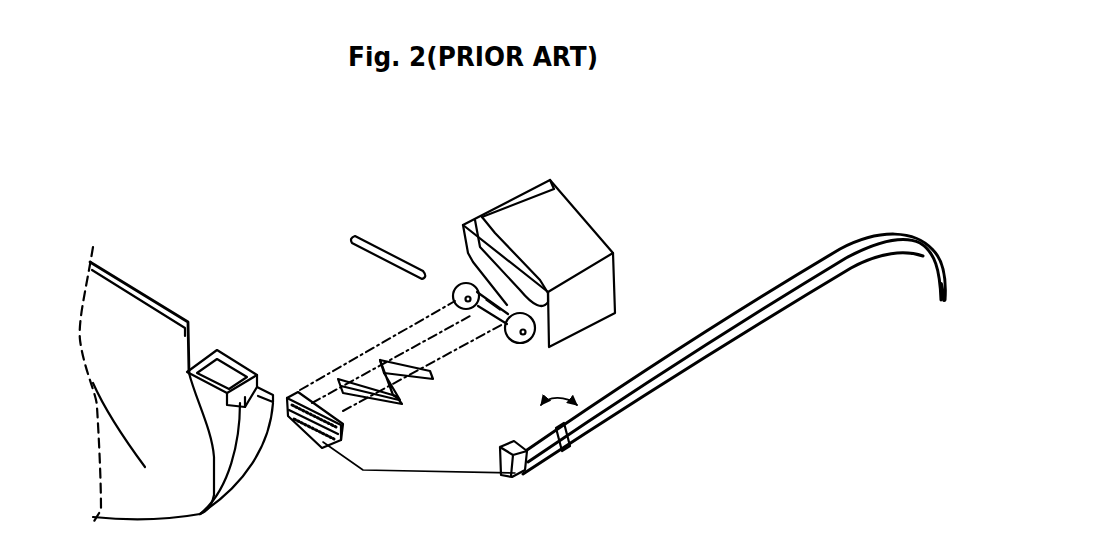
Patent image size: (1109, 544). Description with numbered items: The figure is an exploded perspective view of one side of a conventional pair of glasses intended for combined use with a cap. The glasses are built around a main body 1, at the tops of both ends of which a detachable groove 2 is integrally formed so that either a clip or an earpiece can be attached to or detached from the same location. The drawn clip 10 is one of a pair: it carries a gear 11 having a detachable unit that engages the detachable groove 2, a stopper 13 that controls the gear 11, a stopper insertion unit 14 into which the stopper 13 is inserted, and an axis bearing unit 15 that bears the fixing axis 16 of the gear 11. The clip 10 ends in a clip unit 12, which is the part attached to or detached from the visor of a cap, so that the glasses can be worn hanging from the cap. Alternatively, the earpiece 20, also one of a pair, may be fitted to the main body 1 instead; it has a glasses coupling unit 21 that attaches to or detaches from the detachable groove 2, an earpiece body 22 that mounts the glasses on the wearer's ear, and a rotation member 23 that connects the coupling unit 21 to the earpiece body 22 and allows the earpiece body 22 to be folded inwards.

The main body 1 is at (110, 457).
The detachable groove 2 is at (227, 360).
The clip 10 is at (613, 230).
The gear 11 is at (292, 395).
The clip unit 12 is at (556, 189).
The stopper 13 is at (352, 362).
The stopper insertion unit 14 is at (455, 286).
The axis bearing unit 15 is at (525, 347).
The fixing axis 16 is at (377, 257).
The earpiece 20 is at (722, 335).
The glasses coupling unit 21 is at (523, 472).
The earpiece body 22 is at (733, 340).
The rotation member 23 is at (568, 440).